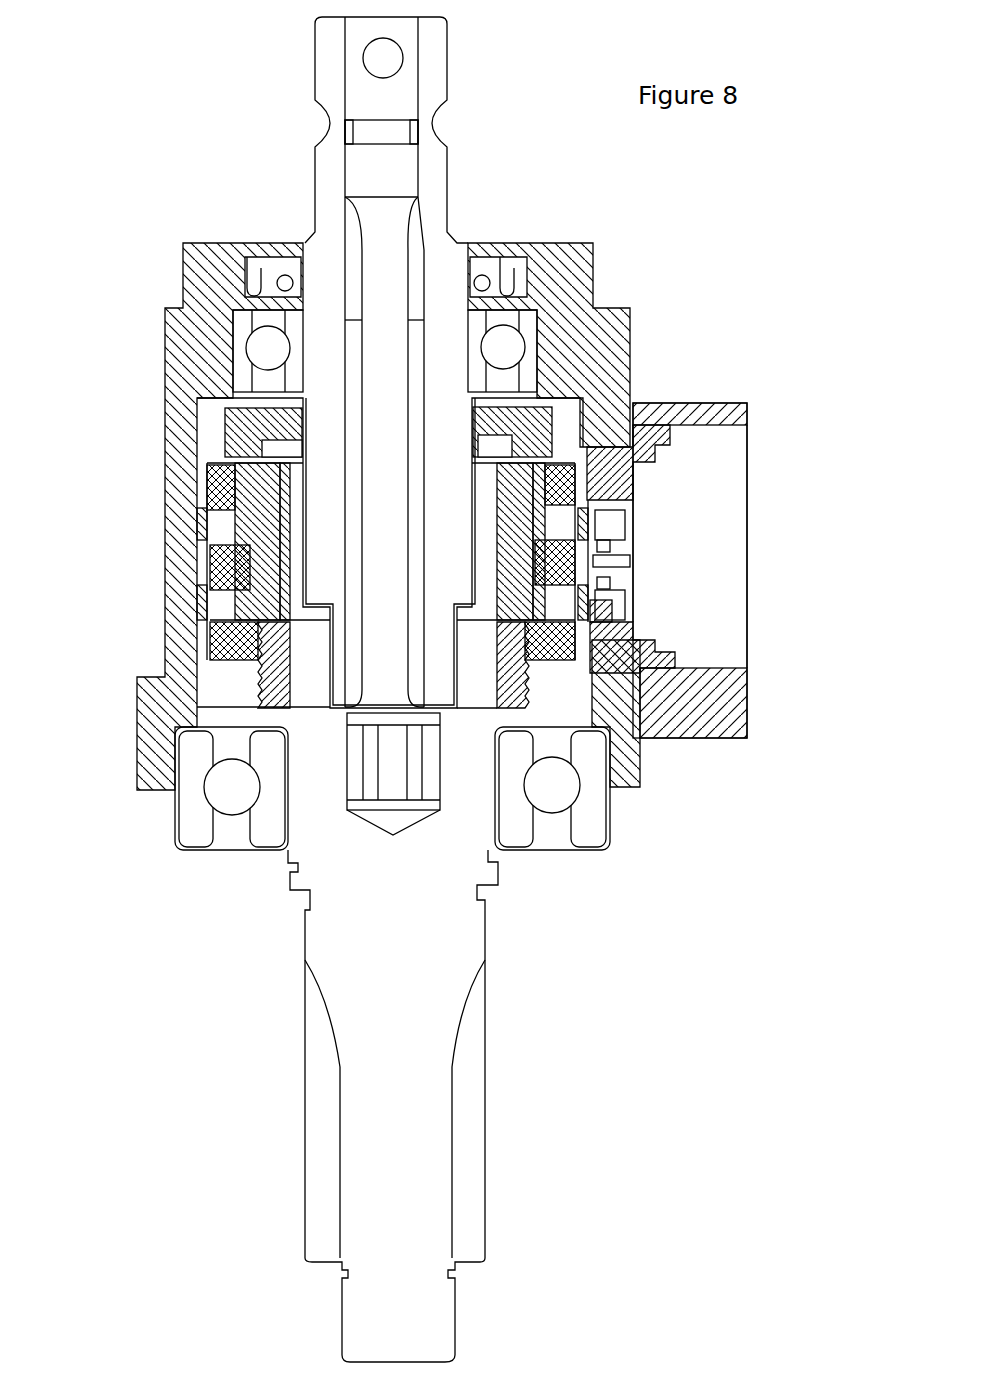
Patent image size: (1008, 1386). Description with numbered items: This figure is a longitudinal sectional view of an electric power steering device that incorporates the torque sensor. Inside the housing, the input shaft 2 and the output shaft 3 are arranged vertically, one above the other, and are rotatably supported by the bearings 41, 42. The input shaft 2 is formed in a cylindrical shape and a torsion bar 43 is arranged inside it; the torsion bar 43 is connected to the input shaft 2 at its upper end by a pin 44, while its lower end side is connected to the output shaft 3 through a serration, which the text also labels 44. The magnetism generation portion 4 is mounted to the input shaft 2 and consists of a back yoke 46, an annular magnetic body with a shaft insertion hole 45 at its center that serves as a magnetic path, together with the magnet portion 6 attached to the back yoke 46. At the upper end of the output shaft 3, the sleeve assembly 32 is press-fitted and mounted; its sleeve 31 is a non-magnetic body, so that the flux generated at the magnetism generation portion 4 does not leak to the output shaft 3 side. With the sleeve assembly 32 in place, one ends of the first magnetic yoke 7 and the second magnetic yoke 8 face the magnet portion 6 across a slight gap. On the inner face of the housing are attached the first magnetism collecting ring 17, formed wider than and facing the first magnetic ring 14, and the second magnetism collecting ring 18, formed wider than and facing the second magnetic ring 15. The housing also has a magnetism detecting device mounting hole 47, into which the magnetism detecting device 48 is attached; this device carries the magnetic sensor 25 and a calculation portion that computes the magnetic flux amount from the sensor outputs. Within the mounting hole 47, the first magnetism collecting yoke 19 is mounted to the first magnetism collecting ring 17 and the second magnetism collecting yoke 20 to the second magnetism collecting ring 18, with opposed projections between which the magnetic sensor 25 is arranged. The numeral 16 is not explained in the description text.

The input shaft 2 is at (433, 90).
The output shaft 3 is at (475, 932).
The magnetism generation portion 4 is at (557, 415).
The magnet portion 6 is at (223, 447).
The first magnetic yoke 7 is at (227, 568).
The second magnetic yoke 8 is at (233, 530).
The first magnetic ring 14 is at (635, 615).
The second magnetic ring 15 is at (633, 470).
The housing 16 is at (578, 280).
The first magnetism collecting ring 17 is at (635, 593).
The second magnetism collecting ring 18 is at (633, 482).
The first magnetism collecting yoke 19 is at (733, 657).
The second magnetism collecting yoke 20 is at (617, 527).
The magnetic sensor 25 is at (630, 565).
The sleeve 31 is at (230, 685).
The sleeve assembly 32 is at (545, 682).
The bearing 41 is at (528, 338).
The bearing 42 is at (600, 816).
The torsion bar 43 is at (392, 238).
The pin 44 is at (403, 58).
The shaft insertion hole 45 is at (223, 430).
The back yoke 46 is at (172, 350).
The magnetism detecting device mounting hole 47 is at (747, 660).
The magnetism detecting device 48 is at (722, 583).